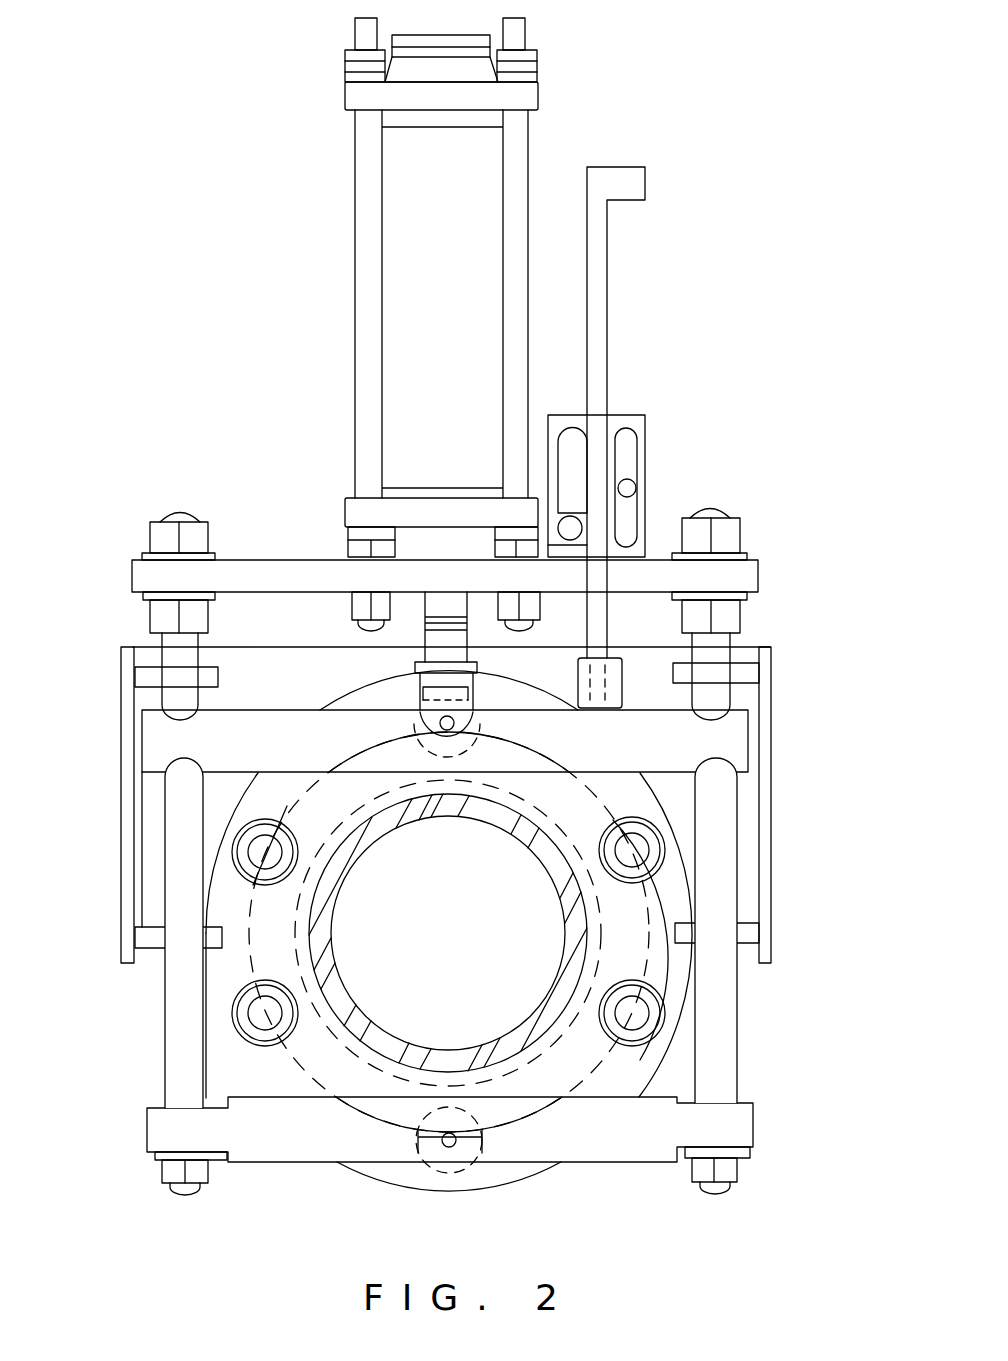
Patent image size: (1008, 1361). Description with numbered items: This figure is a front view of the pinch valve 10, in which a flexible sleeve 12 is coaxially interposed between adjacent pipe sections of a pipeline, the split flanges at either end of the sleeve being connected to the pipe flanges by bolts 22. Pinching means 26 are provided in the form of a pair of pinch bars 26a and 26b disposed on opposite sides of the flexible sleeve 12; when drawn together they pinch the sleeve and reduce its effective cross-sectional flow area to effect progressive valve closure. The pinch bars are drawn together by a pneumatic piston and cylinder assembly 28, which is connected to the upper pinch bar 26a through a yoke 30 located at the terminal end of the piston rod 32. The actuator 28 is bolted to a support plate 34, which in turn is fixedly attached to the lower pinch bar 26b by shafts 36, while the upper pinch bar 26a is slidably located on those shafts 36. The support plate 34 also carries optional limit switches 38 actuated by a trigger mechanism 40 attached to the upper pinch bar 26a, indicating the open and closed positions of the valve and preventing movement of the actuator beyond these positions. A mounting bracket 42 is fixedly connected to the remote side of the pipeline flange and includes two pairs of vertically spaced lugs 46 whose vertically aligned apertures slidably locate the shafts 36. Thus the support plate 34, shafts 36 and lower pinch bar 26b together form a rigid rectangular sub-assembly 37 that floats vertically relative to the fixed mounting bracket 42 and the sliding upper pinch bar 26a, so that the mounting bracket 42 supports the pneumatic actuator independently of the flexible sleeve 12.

The pinch valve 10 is at (267, 343).
The flexible sleeve 12 is at (558, 888).
The bolts 22 is at (255, 882).
The pinching means 26 is at (464, 910).
The upper pinch bar 26a is at (745, 735).
The lower pinch bar 26b is at (752, 1120).
The pneumatic piston and cylinder assembly 28 is at (488, 158).
The yoke 30 is at (415, 672).
The piston rod 32 is at (430, 637).
The support plate 34 is at (270, 575).
The shafts 36 is at (178, 1052).
The rigid rectangular sub-assembly 37 is at (123, 558).
The limit switches 38 is at (640, 478).
The trigger mechanism 40 is at (607, 292).
The mounting bracket 42 is at (745, 648).
The lugs 46 is at (750, 675).